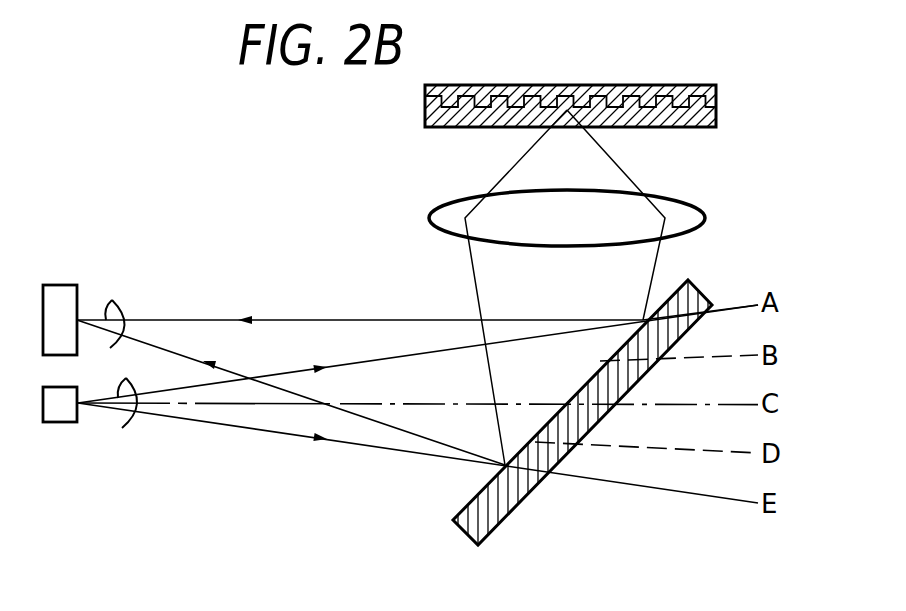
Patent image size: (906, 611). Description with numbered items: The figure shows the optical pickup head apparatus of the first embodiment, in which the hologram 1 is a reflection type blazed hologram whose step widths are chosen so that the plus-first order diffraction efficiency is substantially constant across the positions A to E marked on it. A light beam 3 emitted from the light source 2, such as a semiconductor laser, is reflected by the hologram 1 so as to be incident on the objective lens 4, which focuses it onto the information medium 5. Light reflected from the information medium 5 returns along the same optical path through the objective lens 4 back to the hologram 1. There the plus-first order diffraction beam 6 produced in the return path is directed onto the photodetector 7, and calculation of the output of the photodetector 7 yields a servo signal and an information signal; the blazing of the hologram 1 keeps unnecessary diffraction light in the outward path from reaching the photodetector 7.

The hologram 1 is at (695, 292).
The light source 2 is at (64, 408).
The light beam 3 is at (138, 420).
The objective lens 4 is at (437, 216).
The information medium 5 is at (700, 104).
The +1st order diffraction beam 6 is at (117, 302).
The photodetector 7 is at (60, 296).